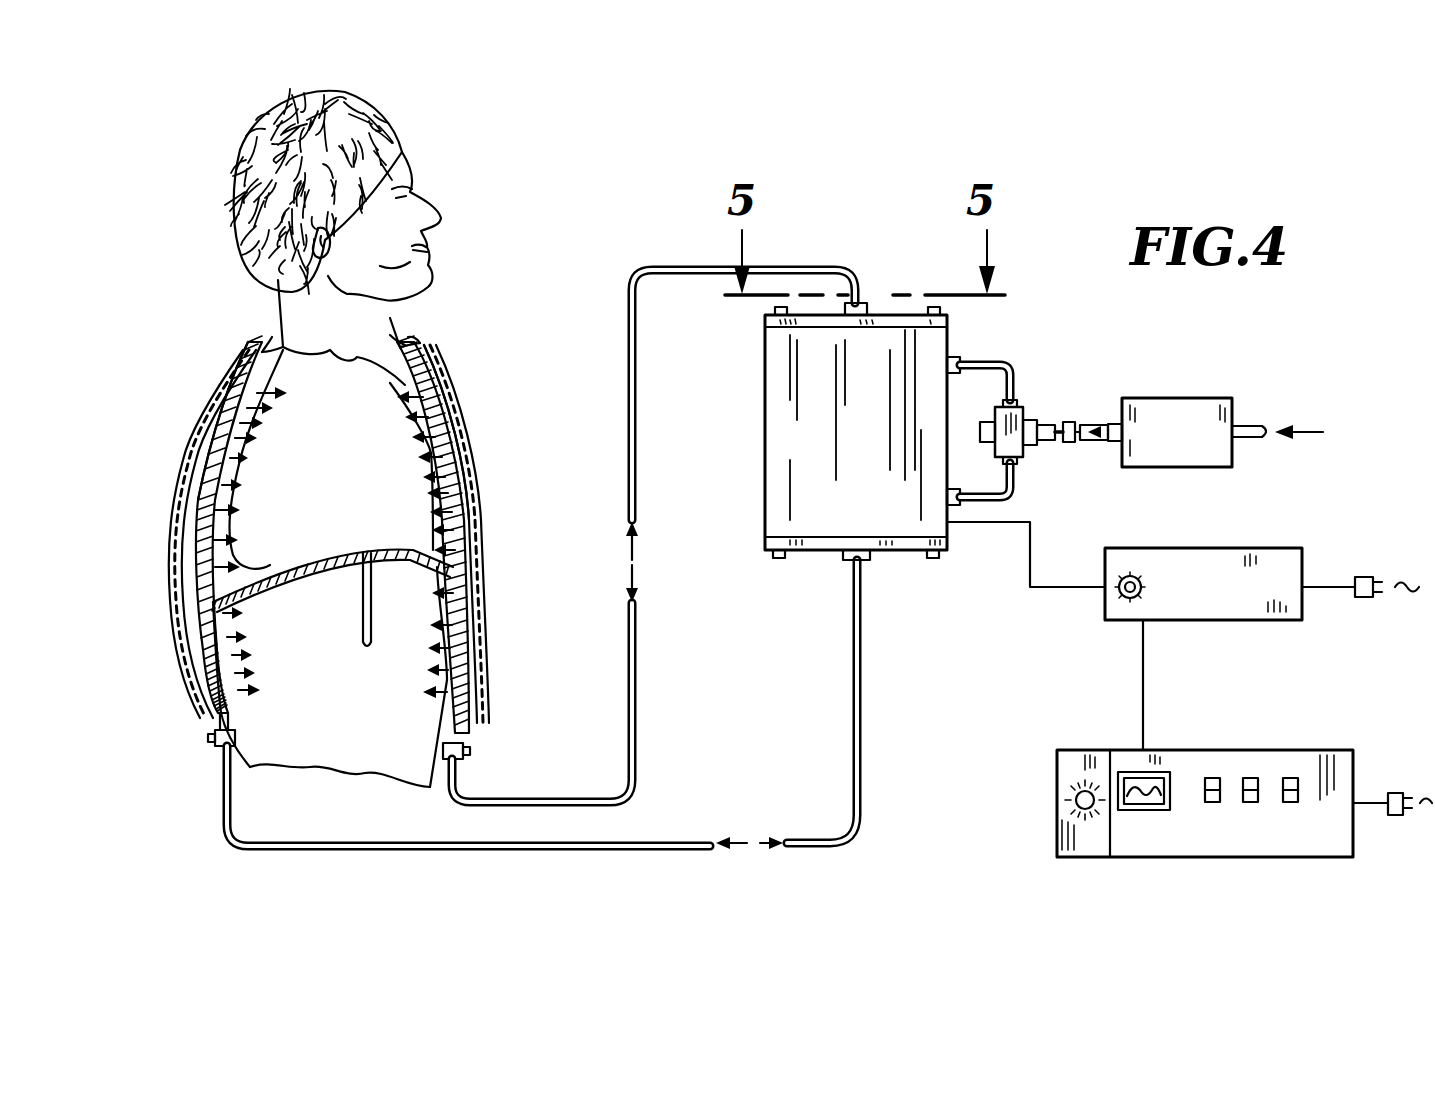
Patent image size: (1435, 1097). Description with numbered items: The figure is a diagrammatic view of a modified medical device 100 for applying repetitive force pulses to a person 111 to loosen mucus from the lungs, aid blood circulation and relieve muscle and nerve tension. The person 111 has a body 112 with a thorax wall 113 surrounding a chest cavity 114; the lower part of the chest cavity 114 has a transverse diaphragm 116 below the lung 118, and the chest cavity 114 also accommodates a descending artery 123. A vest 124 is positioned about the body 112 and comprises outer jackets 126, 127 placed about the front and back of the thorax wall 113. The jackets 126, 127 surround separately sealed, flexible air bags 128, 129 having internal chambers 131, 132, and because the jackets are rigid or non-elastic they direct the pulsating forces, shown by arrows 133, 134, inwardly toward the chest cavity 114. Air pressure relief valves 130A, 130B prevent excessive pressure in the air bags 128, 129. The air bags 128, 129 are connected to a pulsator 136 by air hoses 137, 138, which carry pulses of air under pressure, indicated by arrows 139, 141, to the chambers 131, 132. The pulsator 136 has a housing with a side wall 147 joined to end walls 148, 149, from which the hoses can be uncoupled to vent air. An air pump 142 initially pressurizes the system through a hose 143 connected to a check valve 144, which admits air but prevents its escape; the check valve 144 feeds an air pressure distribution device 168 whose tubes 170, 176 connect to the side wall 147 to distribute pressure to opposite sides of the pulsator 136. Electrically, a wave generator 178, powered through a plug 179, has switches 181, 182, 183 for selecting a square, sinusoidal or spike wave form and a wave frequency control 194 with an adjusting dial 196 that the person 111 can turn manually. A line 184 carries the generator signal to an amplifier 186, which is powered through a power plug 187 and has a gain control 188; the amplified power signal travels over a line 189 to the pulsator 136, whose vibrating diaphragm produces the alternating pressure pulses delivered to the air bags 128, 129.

The medical device 100 is at (888, 375).
The person 111 is at (274, 303).
The body 112 is at (293, 464).
The thorax wall 113 is at (437, 318).
The chest cavity 114 is at (192, 421).
The transverse diaphragm 116 is at (332, 589).
The lung 118 is at (330, 568).
The descending artery 123 is at (398, 599).
The vest 124 is at (494, 423).
The outer jacket 126 is at (482, 534).
The outer jacket 127 is at (174, 534).
The air bag 128 is at (250, 326).
The air bag 129 is at (454, 327).
The air pressure relief valve 130A is at (162, 741).
The air pressure relief valve 130B is at (504, 754).
The internal chamber 131 is at (183, 533).
The internal chamber 132 is at (478, 534).
The arrows indicating pulsating forces 133 is at (256, 541).
The arrows indicating pulsating forces 134 is at (408, 544).
The pulsator 136 is at (816, 375).
The air hose 137 is at (653, 536).
The air hose 138 is at (468, 823).
The arrow indicating air pulses 139 is at (595, 562).
The arrow indicating air pulses 141 is at (786, 704).
The air pump 142 is at (1222, 410).
The hose 143 is at (1100, 402).
The check valve 144 is at (1081, 459).
The side wall 147 is at (807, 425).
The end wall 148 is at (810, 323).
The end wall 149 is at (820, 543).
The air pressure distribution device 168 is at (1035, 401).
The first elbow or tube 170 is at (993, 354).
The second elbow or tube 176 is at (1020, 491).
The wave generator 178 is at (1169, 808).
The plug 179 is at (1392, 781).
The switch 181 is at (1188, 756).
The switch 182 is at (1243, 756).
The switch 183 is at (1308, 756).
The line 184 is at (1108, 685).
The amplifier 186 is at (1199, 563).
The power plug 187 is at (1360, 561).
The control 188 is at (1122, 554).
The line 189 is at (1026, 577).
The wave frequency control 194 is at (1085, 828).
The adjusting dial 196 is at (1044, 801).